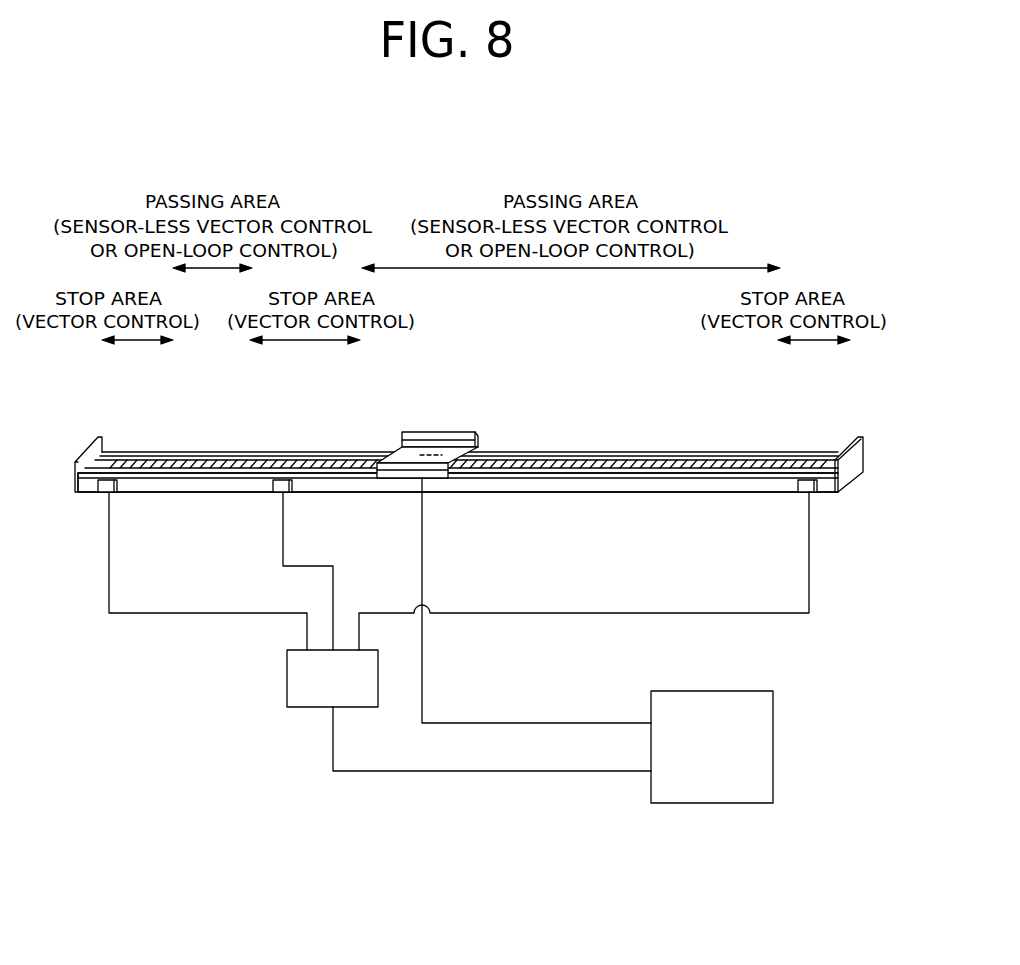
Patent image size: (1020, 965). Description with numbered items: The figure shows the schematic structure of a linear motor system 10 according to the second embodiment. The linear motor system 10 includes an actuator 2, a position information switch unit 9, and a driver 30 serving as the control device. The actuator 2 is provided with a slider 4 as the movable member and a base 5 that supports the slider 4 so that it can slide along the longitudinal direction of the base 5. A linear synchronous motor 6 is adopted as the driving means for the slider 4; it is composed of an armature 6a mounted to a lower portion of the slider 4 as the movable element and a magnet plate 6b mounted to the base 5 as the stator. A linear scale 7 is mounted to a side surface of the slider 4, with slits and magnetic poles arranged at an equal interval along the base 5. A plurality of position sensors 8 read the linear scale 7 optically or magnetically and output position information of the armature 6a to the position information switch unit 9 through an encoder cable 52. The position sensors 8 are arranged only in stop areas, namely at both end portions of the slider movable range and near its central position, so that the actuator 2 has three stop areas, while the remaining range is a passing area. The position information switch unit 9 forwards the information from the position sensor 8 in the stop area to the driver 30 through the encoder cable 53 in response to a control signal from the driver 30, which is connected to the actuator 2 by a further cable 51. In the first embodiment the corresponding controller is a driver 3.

The actuator 2 is at (340, 436).
The driver 3 is at (469, 469).
The slider 4 is at (410, 430).
The base 5 is at (580, 487).
The linear synchronous motor 6 is at (520, 385).
The armature 6a is at (430, 455).
The magnet plate 6b is at (508, 468).
The linear scale 7 is at (393, 479).
The position sensor 8 is at (103, 493).
The position information switch unit 9 is at (287, 667).
The linear motor system 10 is at (124, 832).
The driver 30 is at (742, 691).
The motor cable 51 is at (513, 723).
The encoder cable 52 is at (109, 585).
The encoder cable 53 is at (515, 773).